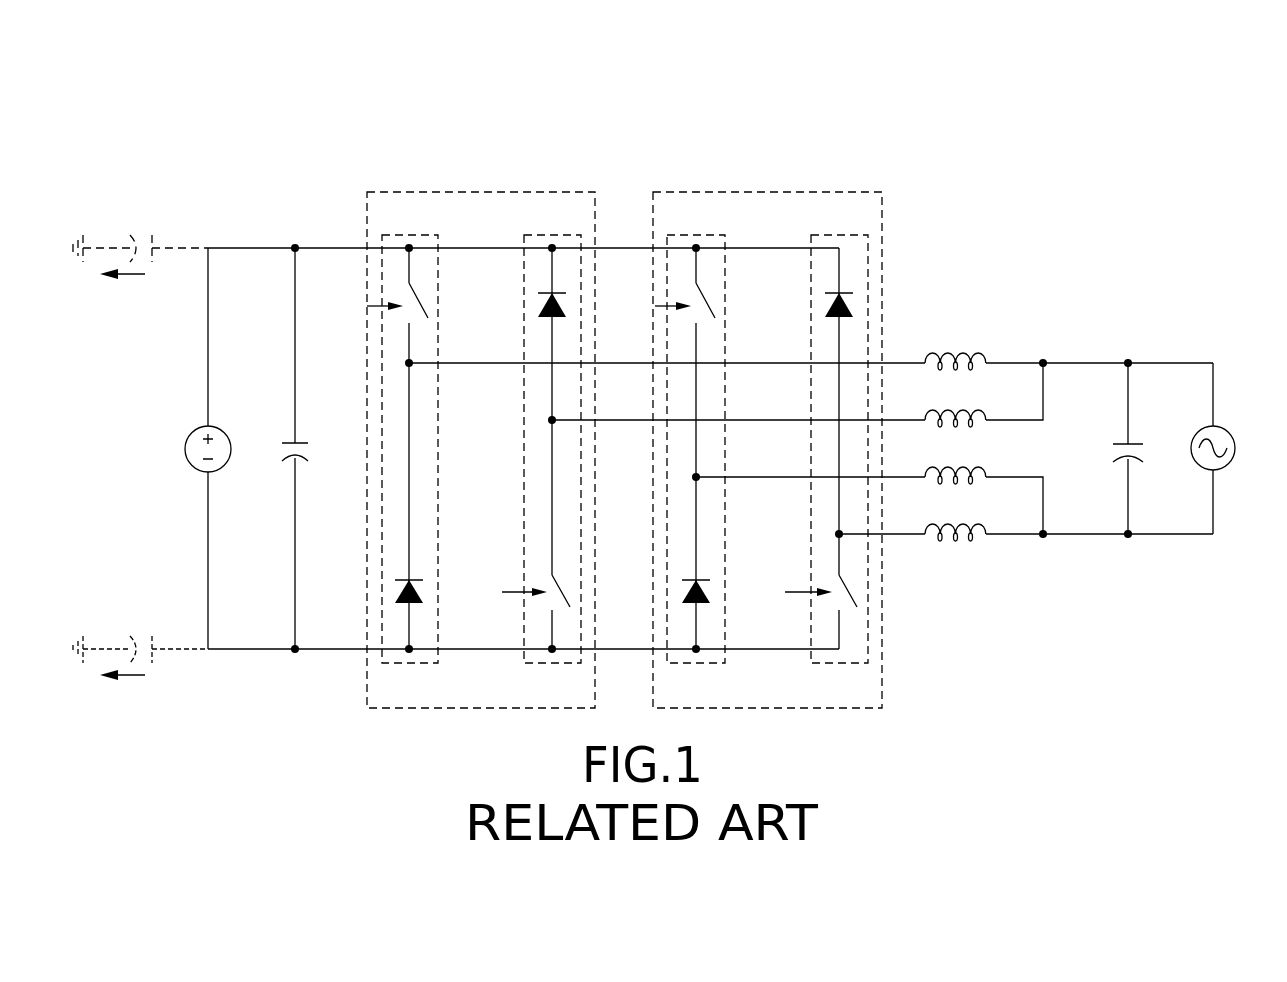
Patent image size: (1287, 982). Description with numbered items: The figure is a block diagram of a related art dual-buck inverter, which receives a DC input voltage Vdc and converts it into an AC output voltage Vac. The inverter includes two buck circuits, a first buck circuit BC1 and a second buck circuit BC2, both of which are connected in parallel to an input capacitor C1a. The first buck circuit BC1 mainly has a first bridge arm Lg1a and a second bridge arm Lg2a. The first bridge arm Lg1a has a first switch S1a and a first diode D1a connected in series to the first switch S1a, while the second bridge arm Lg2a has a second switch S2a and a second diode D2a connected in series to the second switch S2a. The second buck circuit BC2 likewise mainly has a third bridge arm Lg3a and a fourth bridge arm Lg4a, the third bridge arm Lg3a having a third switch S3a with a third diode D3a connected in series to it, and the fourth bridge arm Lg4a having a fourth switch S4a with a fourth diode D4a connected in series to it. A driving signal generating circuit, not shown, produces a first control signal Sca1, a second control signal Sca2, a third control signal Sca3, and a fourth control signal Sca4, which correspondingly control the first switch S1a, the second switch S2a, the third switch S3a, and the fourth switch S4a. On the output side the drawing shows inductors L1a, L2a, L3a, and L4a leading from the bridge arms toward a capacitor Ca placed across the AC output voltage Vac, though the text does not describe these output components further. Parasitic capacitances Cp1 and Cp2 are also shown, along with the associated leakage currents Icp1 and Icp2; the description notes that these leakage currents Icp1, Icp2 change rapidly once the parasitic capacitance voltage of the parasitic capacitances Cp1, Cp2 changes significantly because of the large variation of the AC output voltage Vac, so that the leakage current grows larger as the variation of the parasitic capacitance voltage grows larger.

The DC input voltage Vdc is at (188, 448).
The input capacitor C1a is at (322, 448).
The parasitic capacitance Cp1 is at (140, 233).
The parasitic capacitance Cp2 is at (140, 635).
The leakage current Icp1 is at (134, 288).
The leakage current Icp2 is at (134, 689).
The first buck circuit BC1 is at (480, 192).
The second buck circuit BC2 is at (770, 192).
The first bridge arm Lg1a is at (408, 235).
The second bridge arm Lg2a is at (552, 235).
The third bridge arm Lg3a is at (696, 235).
The fourth bridge arm Lg4a is at (839, 235).
The first switch S1a is at (442, 305).
The second switch S2a is at (584, 536).
The third switch S3a is at (728, 362).
The fourth switch S4a is at (872, 591).
The first control signal Sca1 is at (366, 295).
The second control signal Sca2 is at (509, 581).
The third control signal Sca3 is at (654, 295).
The fourth control signal Sca4 is at (794, 580).
The first diode D1a is at (428, 508).
The second diode D2a is at (572, 334).
The third diode D3a is at (716, 565).
The fourth diode D4a is at (859, 393).
The first inductor L1a is at (811, 349).
The second inductor L2a is at (797, 395).
The third inductor L3a is at (869, 487).
The fourth inductor L4a is at (1026, 519).
The AC filter capacitor Ca is at (1146, 448).
The AC output voltage Vac is at (1236, 448).